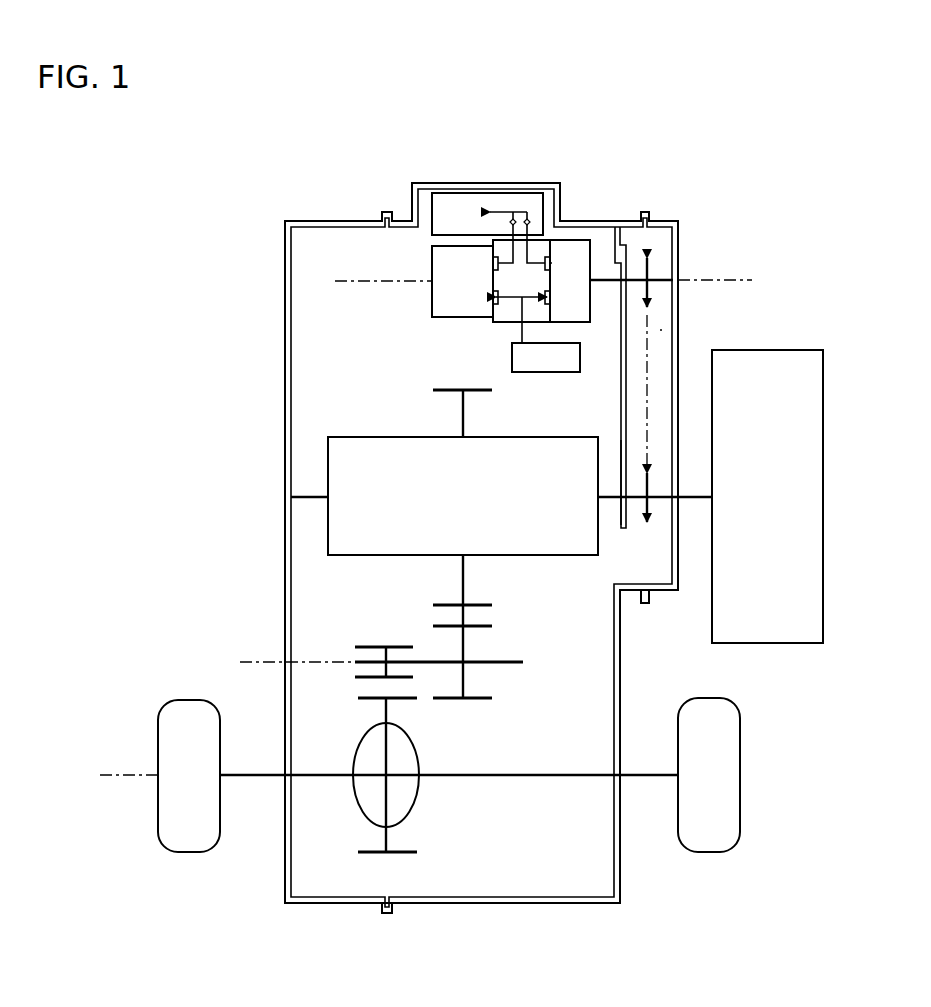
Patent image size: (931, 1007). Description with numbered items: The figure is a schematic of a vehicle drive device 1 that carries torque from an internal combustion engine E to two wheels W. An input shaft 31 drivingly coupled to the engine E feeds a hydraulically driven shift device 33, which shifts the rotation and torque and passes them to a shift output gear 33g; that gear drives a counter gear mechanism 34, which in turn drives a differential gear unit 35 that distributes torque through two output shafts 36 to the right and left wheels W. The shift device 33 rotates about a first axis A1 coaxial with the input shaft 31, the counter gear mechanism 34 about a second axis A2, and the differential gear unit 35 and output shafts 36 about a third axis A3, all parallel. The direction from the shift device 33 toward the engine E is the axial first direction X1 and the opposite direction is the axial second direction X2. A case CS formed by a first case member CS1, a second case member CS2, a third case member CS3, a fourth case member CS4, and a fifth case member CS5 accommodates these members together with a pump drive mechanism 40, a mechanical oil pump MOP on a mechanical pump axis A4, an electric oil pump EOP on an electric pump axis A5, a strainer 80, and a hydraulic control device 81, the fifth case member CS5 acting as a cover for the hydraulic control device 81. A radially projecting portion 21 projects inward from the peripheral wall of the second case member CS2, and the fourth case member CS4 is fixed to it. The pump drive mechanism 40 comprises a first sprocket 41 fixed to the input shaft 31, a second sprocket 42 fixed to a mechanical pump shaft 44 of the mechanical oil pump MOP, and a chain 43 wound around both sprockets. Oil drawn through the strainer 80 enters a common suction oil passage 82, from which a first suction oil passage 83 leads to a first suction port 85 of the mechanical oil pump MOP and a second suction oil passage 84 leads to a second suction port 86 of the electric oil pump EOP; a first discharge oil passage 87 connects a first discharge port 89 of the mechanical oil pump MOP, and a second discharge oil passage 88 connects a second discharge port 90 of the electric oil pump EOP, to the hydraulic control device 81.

The vehicle drive device 1 is at (226, 195).
The radially projecting portion 21 is at (622, 238).
The input shaft 31 is at (695, 497).
The shift device 33 is at (355, 437).
The shift output gear 33g is at (485, 603).
The counter gear mechanism 34 is at (357, 632).
The differential gear unit 35 is at (440, 805).
The output shaft 36 is at (252, 776).
The pump drive mechanism 40 is at (655, 262).
The first sprocket 41 is at (647, 500).
The second sprocket 42 is at (650, 298).
The chain 43 is at (650, 330).
The mechanical pump shaft 44 is at (647, 252).
The strainer 80 is at (552, 367).
The hydraulic control device 81 is at (508, 195).
The common suction oil passage 82 is at (518, 332).
The first suction oil passage 83 is at (528, 300).
The second suction oil passage 84 is at (512, 300).
The first suction port 85 is at (550, 298).
The second suction port 86 is at (493, 298).
The first discharge oil passage 87 is at (530, 252).
The second discharge oil passage 88 is at (512, 243).
The first discharge port 89 is at (550, 263).
The second discharge port 90 is at (493, 263).
The case CS is at (283, 362).
The first case member CS1 is at (285, 418).
The second case member CS2 is at (578, 905).
The third case member CS3 is at (665, 597).
The fourth case member CS4 is at (619, 432).
The fifth case member CS5 is at (428, 183).
The first axis A1 is at (291, 497).
The second axis A2 is at (279, 661).
The third axis A3 is at (111, 774).
The mechanical pump axis A4 is at (730, 280).
The electric pump axis A5 is at (366, 280).
The internal combustion engine E is at (803, 350).
The wheel W is at (188, 852).
The electric oil pump EOP is at (432, 312).
The mechanical oil pump MOP is at (592, 248).
The axial first direction X1 is at (385, 990).
The axial second direction X2 is at (359, 990).